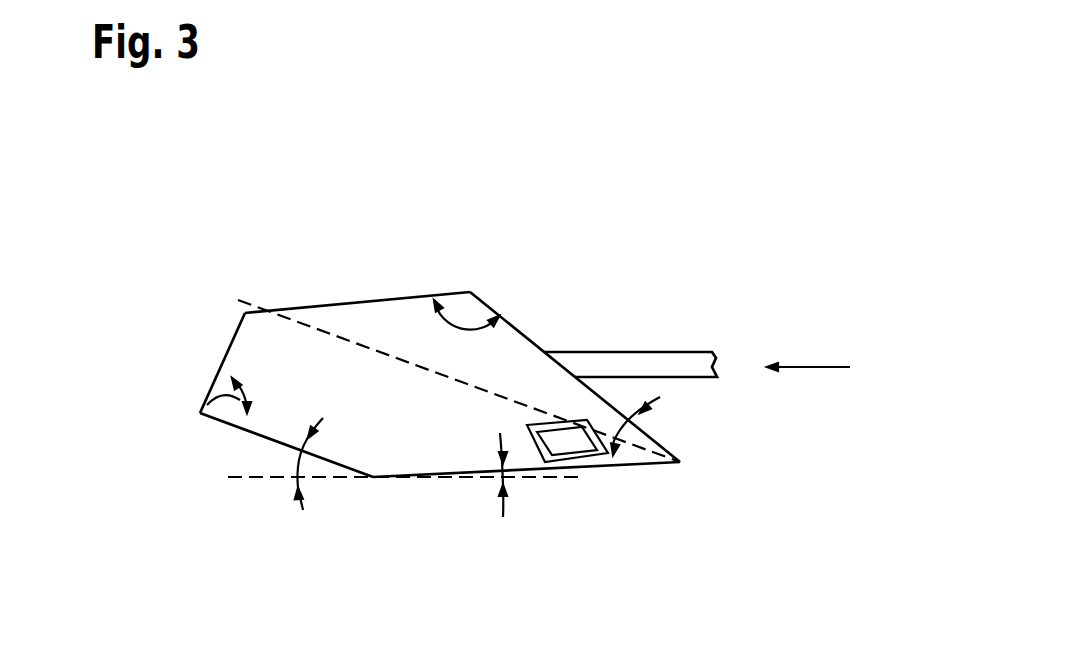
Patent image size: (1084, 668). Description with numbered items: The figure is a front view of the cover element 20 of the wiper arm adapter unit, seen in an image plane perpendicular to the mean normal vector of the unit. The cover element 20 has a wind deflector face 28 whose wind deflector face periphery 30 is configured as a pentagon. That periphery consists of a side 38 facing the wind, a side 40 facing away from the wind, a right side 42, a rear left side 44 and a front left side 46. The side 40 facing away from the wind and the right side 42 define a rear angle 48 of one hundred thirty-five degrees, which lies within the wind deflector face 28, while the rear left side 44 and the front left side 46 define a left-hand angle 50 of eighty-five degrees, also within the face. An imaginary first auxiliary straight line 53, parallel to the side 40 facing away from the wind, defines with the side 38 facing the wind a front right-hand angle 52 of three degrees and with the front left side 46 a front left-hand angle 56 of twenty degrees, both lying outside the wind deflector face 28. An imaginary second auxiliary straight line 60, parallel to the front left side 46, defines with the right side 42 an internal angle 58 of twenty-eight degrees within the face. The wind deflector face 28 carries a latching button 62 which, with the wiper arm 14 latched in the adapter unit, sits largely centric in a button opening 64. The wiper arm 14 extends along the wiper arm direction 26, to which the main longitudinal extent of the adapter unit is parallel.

The cover element 20 is at (577, 205).
The wiper arm 14 is at (690, 360).
The wiper arm direction 26 is at (808, 365).
The wind deflector face 28 is at (428, 315).
The wind deflector face periphery 30 is at (409, 382).
The side facing the wind 38 is at (667, 465).
The side facing away from the wind 40 is at (290, 308).
The right side 42 is at (517, 323).
The rear left side 44 is at (232, 345).
The front left side 46 is at (257, 435).
The rear angle 48 is at (478, 295).
The left-hand angle 50 is at (203, 402).
The front right-hand angle 52 is at (513, 480).
The first auxiliary straight line 53 is at (252, 480).
The front left-hand angle 56 is at (295, 458).
The internal angle 58 is at (643, 431).
The second auxiliary straight line 60 is at (340, 340).
The button 62 is at (562, 445).
The button opening 64 is at (613, 458).